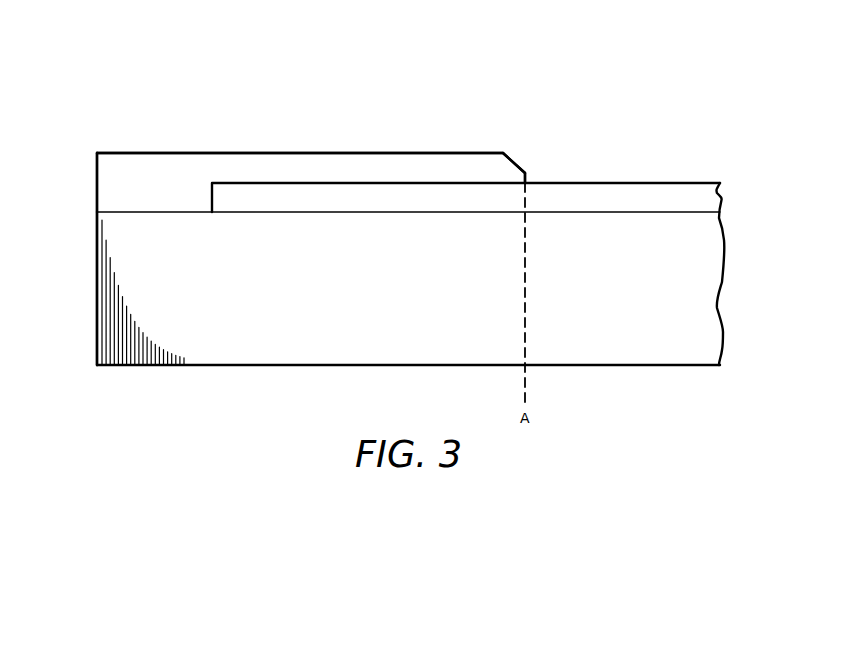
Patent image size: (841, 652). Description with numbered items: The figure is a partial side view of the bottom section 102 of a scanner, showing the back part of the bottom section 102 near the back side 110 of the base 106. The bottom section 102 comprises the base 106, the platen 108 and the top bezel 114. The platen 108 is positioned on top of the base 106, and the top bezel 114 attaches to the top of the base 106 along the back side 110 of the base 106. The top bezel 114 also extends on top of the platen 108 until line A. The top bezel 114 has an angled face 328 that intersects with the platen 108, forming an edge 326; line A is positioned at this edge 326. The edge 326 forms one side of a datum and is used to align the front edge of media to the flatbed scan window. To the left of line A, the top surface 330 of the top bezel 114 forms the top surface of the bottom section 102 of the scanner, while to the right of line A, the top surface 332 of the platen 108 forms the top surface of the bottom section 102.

The bottom section 102 is at (186, 75).
The base 106 is at (225, 367).
The platen 108 is at (633, 200).
The back side 110 is at (95, 299).
The top bezel 114 is at (97, 192).
The edge 326 is at (536, 174).
The angled face 328 is at (518, 163).
The top surface 330 is at (326, 150).
The top surface 332 is at (686, 172).